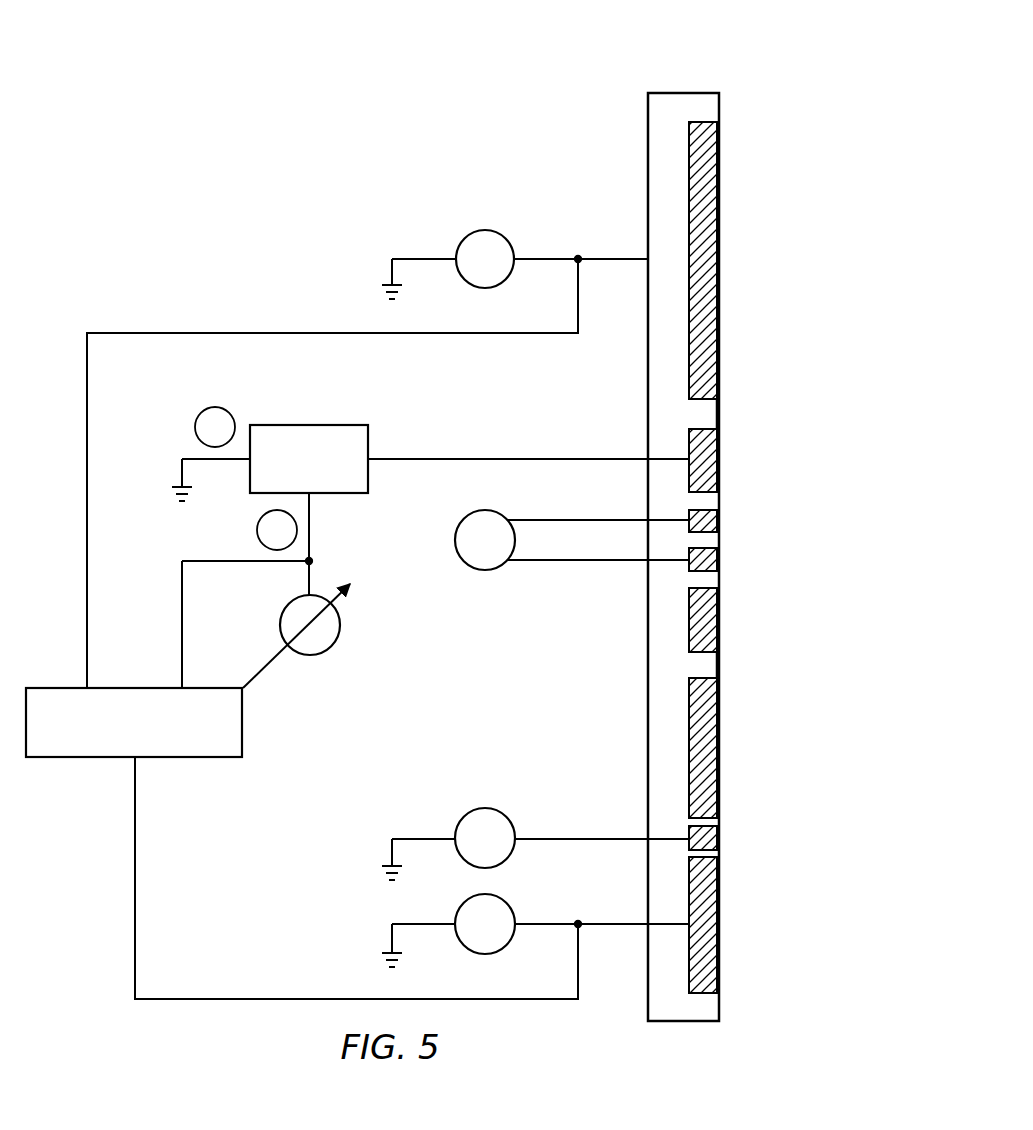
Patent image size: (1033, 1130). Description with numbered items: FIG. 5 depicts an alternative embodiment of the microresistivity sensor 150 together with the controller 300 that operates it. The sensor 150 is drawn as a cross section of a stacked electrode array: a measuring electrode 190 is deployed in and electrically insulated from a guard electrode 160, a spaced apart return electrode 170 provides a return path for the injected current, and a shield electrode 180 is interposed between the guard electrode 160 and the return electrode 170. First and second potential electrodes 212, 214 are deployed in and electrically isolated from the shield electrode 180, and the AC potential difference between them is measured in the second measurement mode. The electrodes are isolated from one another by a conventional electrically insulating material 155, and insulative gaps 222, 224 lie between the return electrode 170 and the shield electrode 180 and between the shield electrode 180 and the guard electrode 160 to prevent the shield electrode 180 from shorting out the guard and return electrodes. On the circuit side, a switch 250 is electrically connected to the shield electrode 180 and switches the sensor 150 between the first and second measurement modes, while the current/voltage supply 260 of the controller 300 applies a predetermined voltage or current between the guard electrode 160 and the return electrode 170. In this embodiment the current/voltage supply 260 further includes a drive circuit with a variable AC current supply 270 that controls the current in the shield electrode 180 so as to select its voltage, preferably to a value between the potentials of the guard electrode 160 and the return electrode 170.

The microresistivity sensor 150 is at (684, 90).
The electrically insulating material 155 is at (679, 1010).
The guard electrode 160 is at (720, 955).
The return electrode 170 is at (722, 212).
The shield electrode 180 is at (720, 478).
The measuring electrode 190 is at (720, 843).
The first potential electrode 212 is at (720, 525).
The second potential electrode 214 is at (720, 567).
The insulative gap 222 is at (722, 412).
The insulative gap 224 is at (720, 665).
The switch 250 is at (309, 425).
The current/voltage supply 260 is at (75, 758).
The variable AC current supply 270 is at (265, 668).
The controller 300 is at (196, 192).